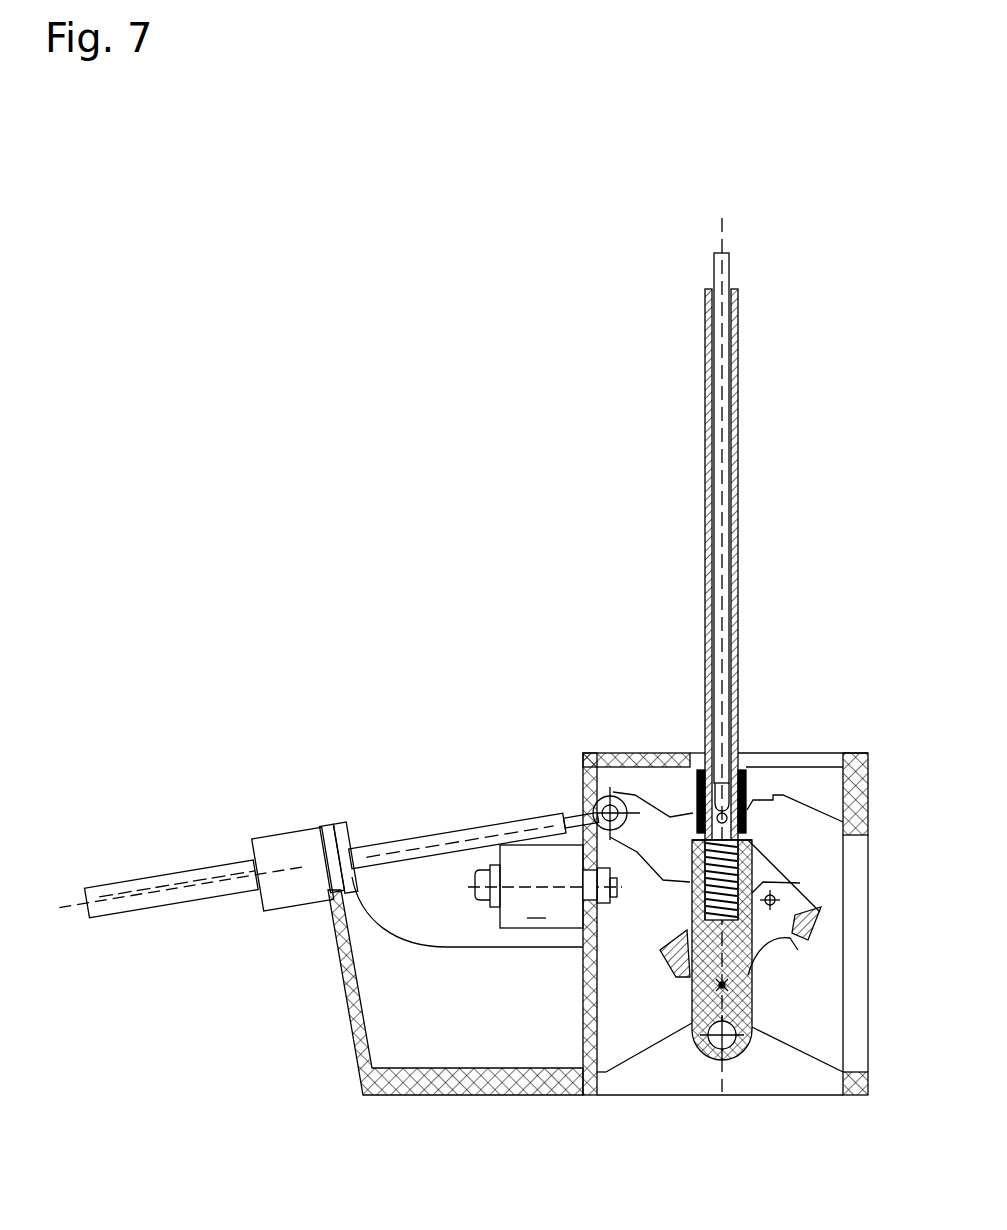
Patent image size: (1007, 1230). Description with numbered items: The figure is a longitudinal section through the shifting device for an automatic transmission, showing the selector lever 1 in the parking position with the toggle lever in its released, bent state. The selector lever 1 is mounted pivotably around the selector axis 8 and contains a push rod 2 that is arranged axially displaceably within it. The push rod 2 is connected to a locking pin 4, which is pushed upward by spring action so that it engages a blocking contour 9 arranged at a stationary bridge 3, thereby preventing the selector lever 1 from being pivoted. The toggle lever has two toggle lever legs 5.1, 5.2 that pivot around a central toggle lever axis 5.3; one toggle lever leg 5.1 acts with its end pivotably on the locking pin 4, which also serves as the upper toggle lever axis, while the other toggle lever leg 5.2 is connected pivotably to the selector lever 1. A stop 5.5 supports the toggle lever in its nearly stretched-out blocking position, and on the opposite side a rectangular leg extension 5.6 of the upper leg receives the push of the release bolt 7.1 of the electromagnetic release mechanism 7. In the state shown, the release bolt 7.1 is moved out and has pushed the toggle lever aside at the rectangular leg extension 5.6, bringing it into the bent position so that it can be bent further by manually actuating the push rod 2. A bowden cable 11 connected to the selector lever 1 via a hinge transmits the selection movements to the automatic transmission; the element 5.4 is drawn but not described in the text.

The selector lever 1 is at (704, 402).
The push rod 2 is at (730, 253).
The stationary bridge 3 is at (771, 776).
The locking pin 4 is at (698, 808).
The toggle lever leg 5.1 is at (768, 857).
The toggle lever leg 5.2 is at (765, 950).
The central toggle lever axis 5.3 is at (776, 897).
The pin 5.4 is at (745, 1000).
The stop 5.5 is at (823, 941).
The rectangular leg extension 5.6 is at (663, 962).
The release mechanism 7 is at (545, 886).
The release bolt 7.1 is at (602, 905).
The selector axis 8 is at (727, 1057).
The blocking contour 9 is at (760, 802).
The bowden cable 11 is at (437, 833).